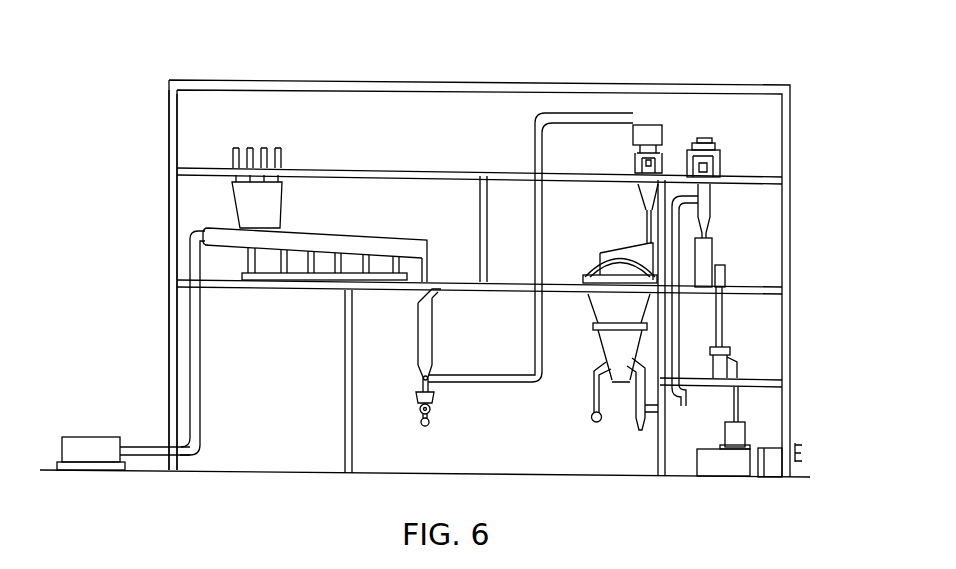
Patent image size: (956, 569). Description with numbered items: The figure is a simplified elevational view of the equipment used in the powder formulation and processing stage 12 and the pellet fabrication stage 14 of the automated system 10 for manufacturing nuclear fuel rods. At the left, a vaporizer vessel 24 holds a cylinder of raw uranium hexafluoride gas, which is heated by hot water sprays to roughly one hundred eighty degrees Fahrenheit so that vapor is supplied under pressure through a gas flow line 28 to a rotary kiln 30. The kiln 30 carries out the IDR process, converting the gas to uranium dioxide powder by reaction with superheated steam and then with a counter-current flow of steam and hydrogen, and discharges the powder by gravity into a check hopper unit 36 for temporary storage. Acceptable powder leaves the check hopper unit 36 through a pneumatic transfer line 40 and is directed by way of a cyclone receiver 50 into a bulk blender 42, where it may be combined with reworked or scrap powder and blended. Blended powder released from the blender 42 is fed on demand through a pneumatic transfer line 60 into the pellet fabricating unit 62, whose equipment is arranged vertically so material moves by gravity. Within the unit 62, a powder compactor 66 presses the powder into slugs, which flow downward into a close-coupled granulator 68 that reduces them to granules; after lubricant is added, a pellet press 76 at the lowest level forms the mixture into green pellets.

The automated system 10 is at (146, 72).
The powder formulation and processing stage 12 is at (117, 171).
The pellet fabrication stage 14 is at (776, 61).
The vaporizer vessel 24 is at (84, 437).
The gas flow line 28 is at (200, 383).
The rotary kiln 30 is at (323, 220).
The check hopper unit 36 is at (412, 357).
The pneumatic transfer line 40 is at (533, 313).
The bulk blender 42 is at (590, 308).
The cyclone receiver 50 is at (655, 125).
The pneumatic transfer line 60 is at (675, 410).
The pellet fabricating unit 62 is at (721, 124).
The powder compactor 66 is at (711, 201).
The granulator 68 is at (714, 249).
The pellet press 76 is at (727, 428).